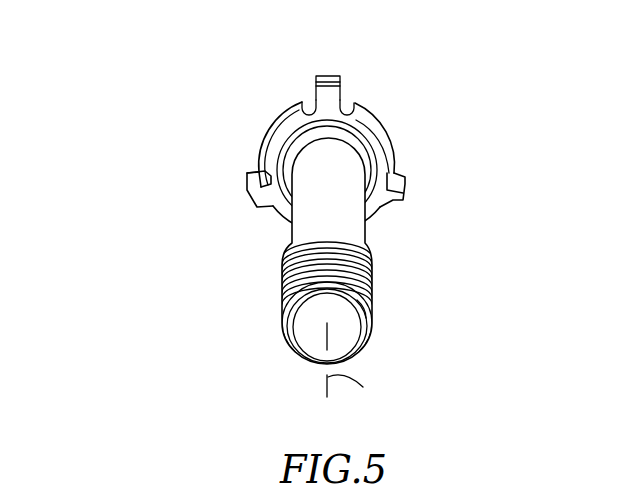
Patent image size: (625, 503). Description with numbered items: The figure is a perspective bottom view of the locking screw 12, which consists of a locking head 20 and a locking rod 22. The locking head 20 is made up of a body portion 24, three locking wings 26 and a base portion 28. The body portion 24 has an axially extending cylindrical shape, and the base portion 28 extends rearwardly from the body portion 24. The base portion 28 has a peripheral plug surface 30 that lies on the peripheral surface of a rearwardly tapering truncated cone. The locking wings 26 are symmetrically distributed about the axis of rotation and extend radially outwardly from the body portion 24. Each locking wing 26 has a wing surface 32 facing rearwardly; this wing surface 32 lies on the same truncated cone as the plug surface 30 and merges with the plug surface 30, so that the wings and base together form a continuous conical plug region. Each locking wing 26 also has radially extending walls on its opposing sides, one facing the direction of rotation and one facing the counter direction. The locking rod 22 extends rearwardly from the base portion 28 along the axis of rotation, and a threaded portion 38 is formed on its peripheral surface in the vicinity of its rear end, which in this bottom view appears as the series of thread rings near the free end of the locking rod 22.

The locking screw 12 is at (274, 220).
The locking head 20 is at (327, 138).
The locking rod 22 is at (372, 267).
The body portion 24 is at (280, 123).
The locking wings 26 is at (298, 74).
The base portion 28 is at (248, 157).
The plug surface 30 is at (377, 140).
The wing surface 32 is at (328, 91).
The threaded portion 38 is at (390, 300).